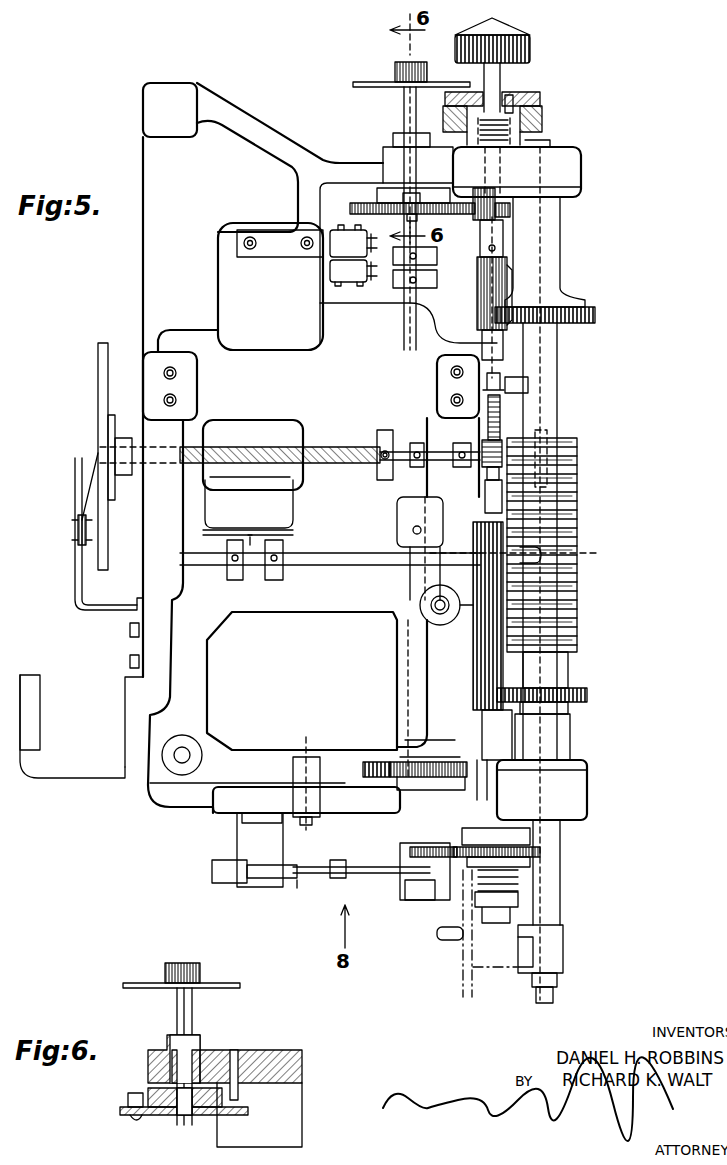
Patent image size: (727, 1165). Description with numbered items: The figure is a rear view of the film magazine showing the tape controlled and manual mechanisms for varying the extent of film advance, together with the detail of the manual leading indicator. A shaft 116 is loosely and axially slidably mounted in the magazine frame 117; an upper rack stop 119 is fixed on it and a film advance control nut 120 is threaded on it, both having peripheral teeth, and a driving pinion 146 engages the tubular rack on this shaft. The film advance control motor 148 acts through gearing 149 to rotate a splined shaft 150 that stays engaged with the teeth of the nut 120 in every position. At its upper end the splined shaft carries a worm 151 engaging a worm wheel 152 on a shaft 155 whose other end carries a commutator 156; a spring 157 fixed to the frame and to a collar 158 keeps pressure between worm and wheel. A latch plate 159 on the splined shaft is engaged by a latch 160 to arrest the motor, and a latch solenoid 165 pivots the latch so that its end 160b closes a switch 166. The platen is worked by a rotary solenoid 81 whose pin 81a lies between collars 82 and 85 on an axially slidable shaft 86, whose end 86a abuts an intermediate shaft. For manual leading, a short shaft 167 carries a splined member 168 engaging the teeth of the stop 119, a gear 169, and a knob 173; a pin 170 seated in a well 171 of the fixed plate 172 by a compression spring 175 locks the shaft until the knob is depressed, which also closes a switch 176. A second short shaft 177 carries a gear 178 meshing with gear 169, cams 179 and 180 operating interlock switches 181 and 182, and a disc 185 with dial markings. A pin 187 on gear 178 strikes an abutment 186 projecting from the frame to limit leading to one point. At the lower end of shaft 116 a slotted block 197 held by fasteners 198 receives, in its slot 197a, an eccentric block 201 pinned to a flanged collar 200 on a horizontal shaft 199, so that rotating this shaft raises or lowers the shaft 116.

In FIG. 5, the knob 173 is at (530, 42).
In FIG. 5, the fixed plate 172 is at (484, 95).
In FIG. 5, the pin 170 is at (512, 100).
In FIG. 5, the well 171 is at (540, 100).
In FIG. 5, the compression spring 175 is at (500, 122).
In FIG. 5, the magazine frame 117 is at (575, 162).
In FIG. 6, the magazine frame 117 is at (285, 1067).
In FIG. 5, the disc 185 is at (395, 85).
In FIG. 6, the disc 185 is at (230, 983).
In FIG. 5, the second short shaft 177 is at (403, 105).
In FIG. 6, the second short shaft 177 is at (192, 1010).
In FIG. 5, the gear 178 is at (360, 205).
In FIG. 6, the gear 178 is at (158, 1115).
In FIG. 5, the pin 187 is at (412, 198).
In FIG. 6, the pin 187 is at (128, 1098).
In FIG. 5, the gear 169 is at (510, 212).
In FIG. 5, the short shaft 167 is at (480, 238).
In FIG. 5, the splined member 168 is at (508, 273).
In FIG. 5, the upper rack stop 119 is at (595, 315).
In FIG. 5, the shaft 116 is at (548, 378).
In FIG. 5, the switch 176 is at (520, 378).
In FIG. 5, the worm wheel 152 is at (500, 410).
In FIG. 5, the worm 151 is at (484, 458).
In FIG. 5, the driving pinion 146 is at (548, 438).
In FIG. 5, the end of shaft 86a is at (536, 553).
In FIG. 5, the film advance control nut 120 is at (548, 663).
In FIG. 5, the splined shaft 150 is at (488, 668).
In FIG. 5, the interlock switch 181 is at (345, 245).
In FIG. 5, the interlock switch 182 is at (340, 270).
In FIG. 5, the cam 179 is at (437, 252).
In FIG. 5, the cam 180 is at (437, 274).
In FIG. 5, the commutator 156 is at (100, 382).
In FIG. 5, the spring 157 is at (320, 447).
In FIG. 5, the shaft 155 is at (400, 455).
In FIG. 5, the collar 158 is at (380, 480).
In FIG. 5, the rotary solenoid 81 is at (283, 515).
In FIG. 5, the axially slidable shaft 86 is at (355, 560).
In FIG. 5, the collar 82 is at (227, 572).
In FIG. 5, the collar 85 is at (283, 572).
In FIG. 5, the pin 81a is at (252, 548).
In FIG. 5, the film advance control motor 148 is at (258, 448).
In FIG. 5, the latch solenoid 165 is at (306, 812).
In FIG. 5, the gearing 149 is at (465, 790).
In FIG. 5, the switch 166 is at (212, 872).
In FIG. 5, the latch 160 is at (383, 878).
In FIG. 5, the end of latch 160b is at (305, 880).
In FIG. 5, the latch plate 159 is at (530, 836).
In FIG. 5, the slotted block 197 is at (563, 940).
In FIG. 5, the slot 197a is at (533, 952).
In FIG. 5, the fasteners 198 is at (557, 985).
In FIG. 5, the horizontal shaft 199 is at (445, 940).
In FIG. 5, the flanged collar 200 is at (472, 967).
In FIG. 5, the eccentric block 201 is at (500, 975).
In FIG. 6, the abutment 186 is at (238, 1085).